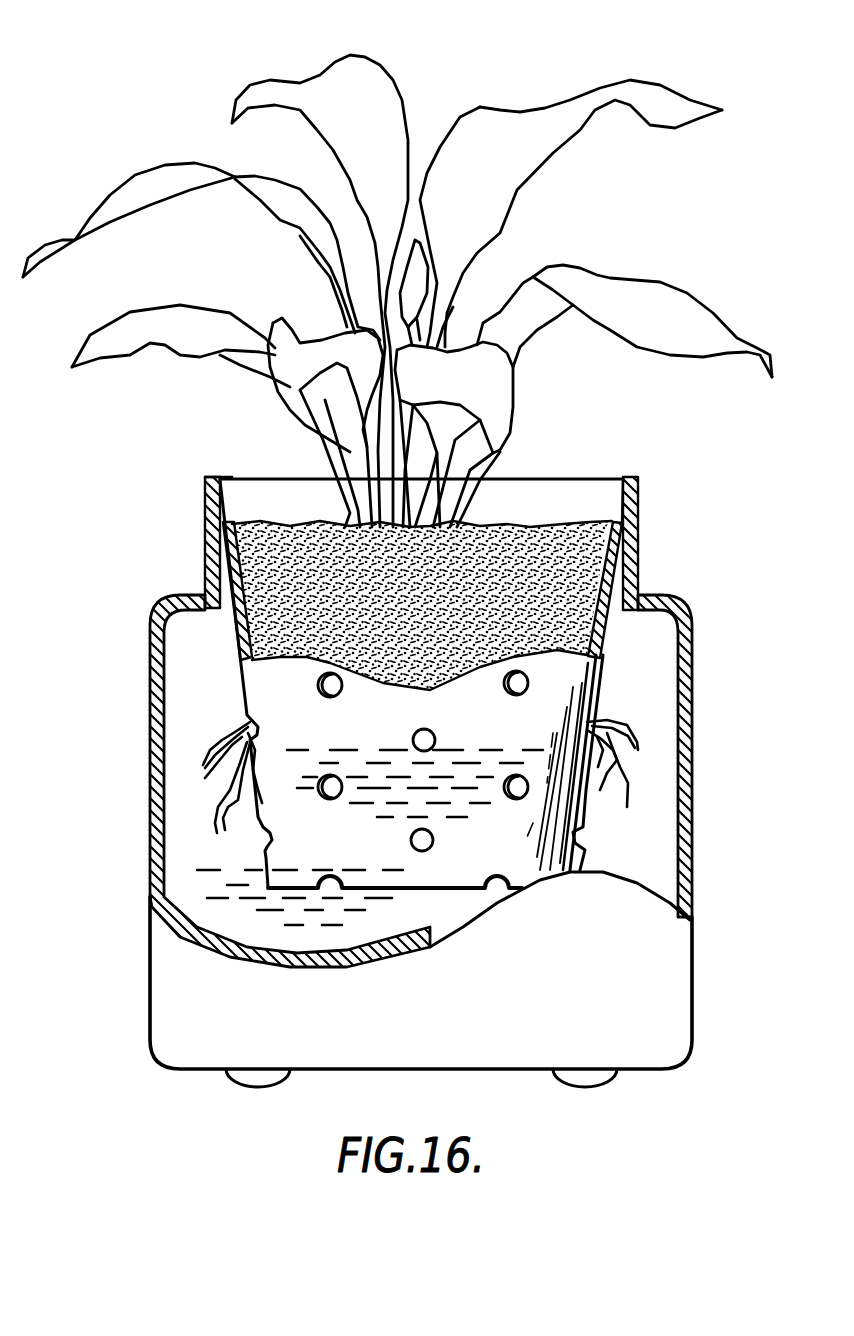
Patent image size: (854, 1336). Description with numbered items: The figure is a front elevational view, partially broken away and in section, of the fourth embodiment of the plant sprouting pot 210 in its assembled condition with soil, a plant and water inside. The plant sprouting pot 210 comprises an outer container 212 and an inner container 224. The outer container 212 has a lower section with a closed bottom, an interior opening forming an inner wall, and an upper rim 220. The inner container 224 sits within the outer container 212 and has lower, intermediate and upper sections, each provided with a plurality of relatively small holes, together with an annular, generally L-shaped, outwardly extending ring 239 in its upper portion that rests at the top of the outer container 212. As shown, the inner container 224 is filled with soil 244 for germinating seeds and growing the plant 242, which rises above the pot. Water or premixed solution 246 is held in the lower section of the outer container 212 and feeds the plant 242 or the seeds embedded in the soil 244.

The plant sprouting pot 210 is at (130, 600).
The outer container 212 is at (148, 674).
The upper rim 220 is at (203, 556).
The inner container 224 is at (343, 740).
The collar 239 is at (229, 492).
The plant 242 is at (423, 123).
The soil 244 is at (483, 560).
The water or premixed solution 246 is at (208, 877).